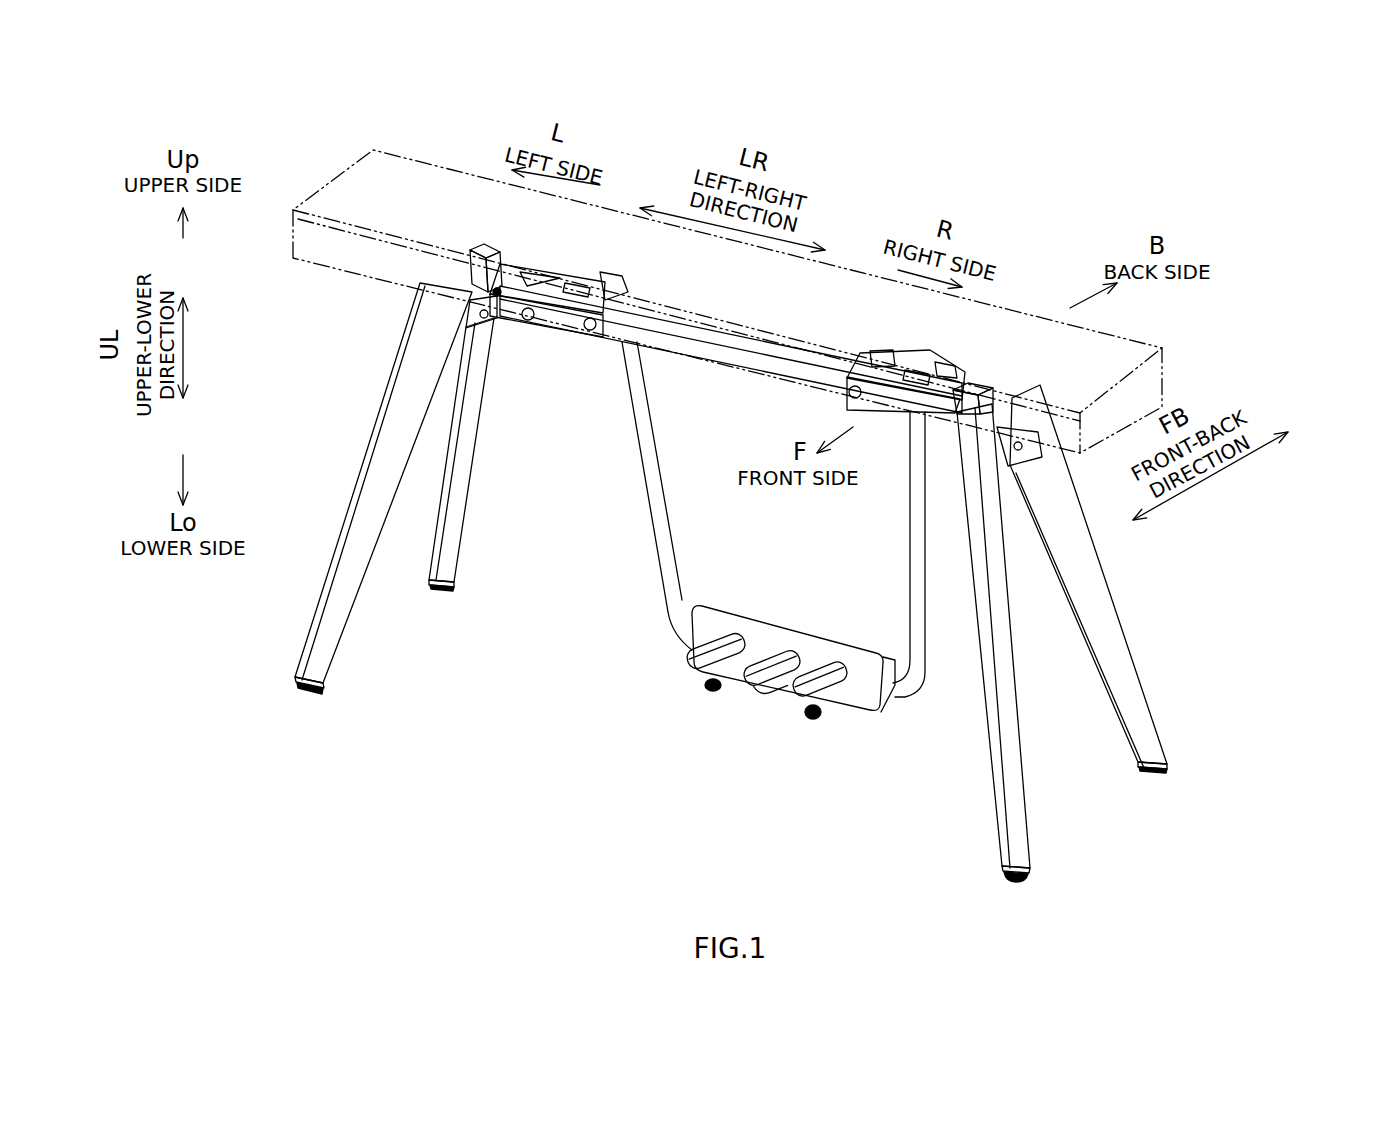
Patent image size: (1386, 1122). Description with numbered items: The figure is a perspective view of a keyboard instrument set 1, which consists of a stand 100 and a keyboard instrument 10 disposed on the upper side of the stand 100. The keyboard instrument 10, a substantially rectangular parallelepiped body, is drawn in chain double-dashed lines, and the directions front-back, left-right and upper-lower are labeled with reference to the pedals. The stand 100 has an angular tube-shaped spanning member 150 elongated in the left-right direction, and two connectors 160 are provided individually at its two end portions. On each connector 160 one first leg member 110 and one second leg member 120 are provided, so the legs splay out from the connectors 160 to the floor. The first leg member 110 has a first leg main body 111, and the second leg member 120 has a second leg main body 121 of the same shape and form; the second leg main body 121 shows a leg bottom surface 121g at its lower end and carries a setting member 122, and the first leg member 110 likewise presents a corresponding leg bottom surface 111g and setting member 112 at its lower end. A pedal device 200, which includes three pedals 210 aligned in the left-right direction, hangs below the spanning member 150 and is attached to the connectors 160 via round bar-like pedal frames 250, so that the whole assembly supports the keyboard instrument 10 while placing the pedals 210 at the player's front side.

The keyboard instrument set 1 is at (1187, 241).
The keyboard instrument 10 is at (605, 198).
The stand 100 is at (1167, 535).
The first leg member 110 is at (1123, 895).
The first leg main body 111 is at (1012, 787).
The first leg grip/foot 111g is at (312, 697).
The first leg end cap 112 is at (303, 693).
The second leg member 120 is at (482, 460).
The second leg main body 121 is at (453, 528).
The leg bottom surface 121g is at (449, 588).
The setting member 122 is at (438, 588).
The spanning member 150 is at (812, 335).
The connector 160 is at (1085, 168).
The pedal device 200 is at (827, 720).
The pedal 210 is at (697, 665).
The pedal frame 250 is at (650, 480).